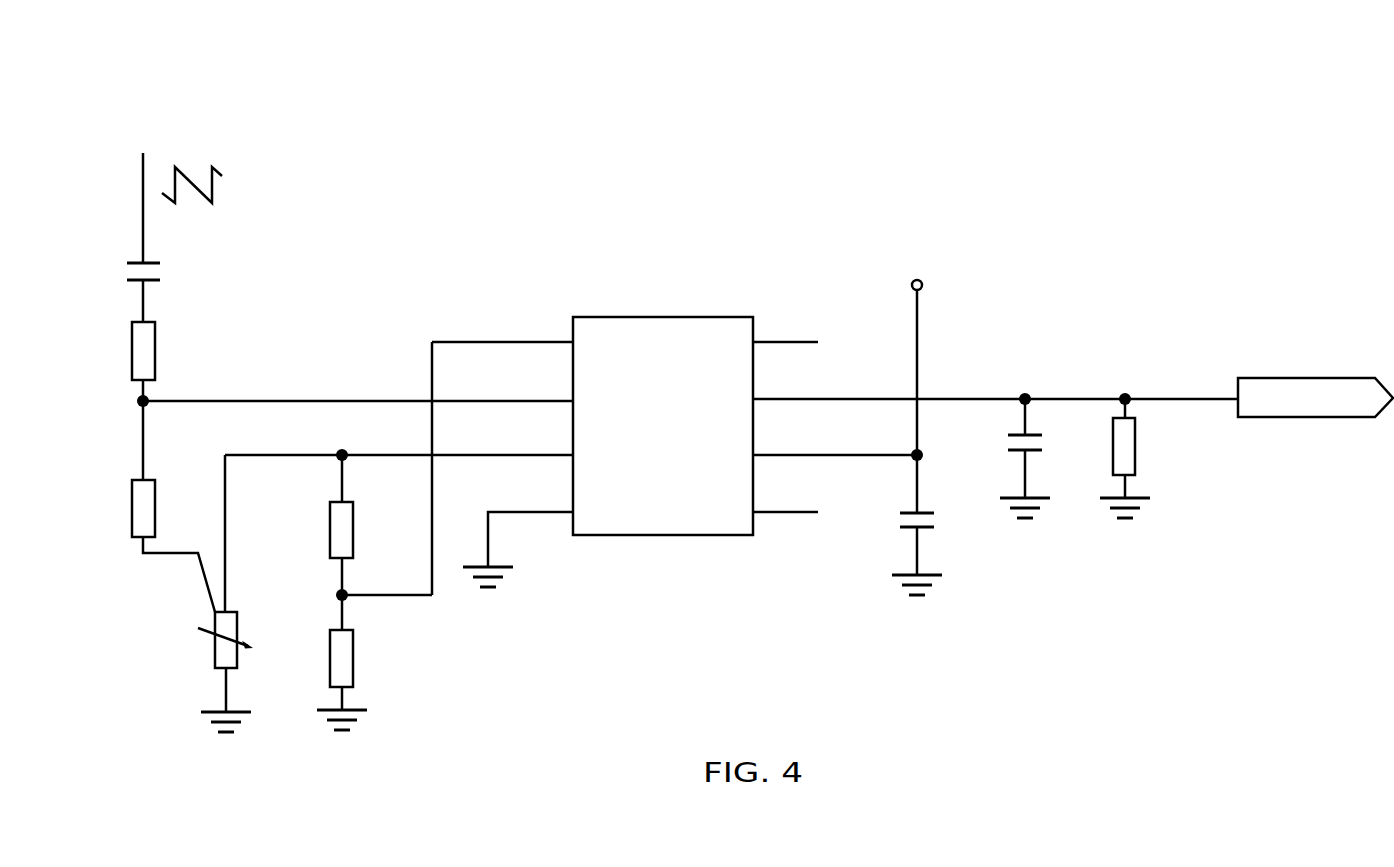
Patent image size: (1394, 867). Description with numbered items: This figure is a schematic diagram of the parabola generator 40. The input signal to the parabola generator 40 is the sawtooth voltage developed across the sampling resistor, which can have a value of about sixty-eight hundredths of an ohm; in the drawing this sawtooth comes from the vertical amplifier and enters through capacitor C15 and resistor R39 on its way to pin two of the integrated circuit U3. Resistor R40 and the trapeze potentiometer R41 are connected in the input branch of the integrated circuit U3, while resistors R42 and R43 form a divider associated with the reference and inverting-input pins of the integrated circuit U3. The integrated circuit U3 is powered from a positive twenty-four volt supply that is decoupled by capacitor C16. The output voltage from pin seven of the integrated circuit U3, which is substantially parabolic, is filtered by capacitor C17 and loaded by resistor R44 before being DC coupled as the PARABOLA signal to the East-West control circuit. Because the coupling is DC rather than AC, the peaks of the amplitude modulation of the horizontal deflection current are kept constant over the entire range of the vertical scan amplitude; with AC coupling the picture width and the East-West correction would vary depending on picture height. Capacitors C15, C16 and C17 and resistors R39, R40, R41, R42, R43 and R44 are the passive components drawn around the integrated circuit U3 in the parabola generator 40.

The parabola generator 40 is at (734, 395).
The integrated circuit U3 is at (671, 394).
The capacitor 10 microfarad C15 is at (171, 271).
The capacitor 100 nanofarad C16 is at (889, 531).
The capacitor 2.2 nanofarad C17 is at (999, 441).
The resistor 15K R39 is at (168, 351).
The resistor 470K R40 is at (115, 508).
The trapeze potentiometer 100K R41 is at (175, 662).
The resistor 5.6K R42 is at (314, 528).
The resistor 5.6K R43 is at (314, 657).
The resistor 22K R44 is at (1148, 446).